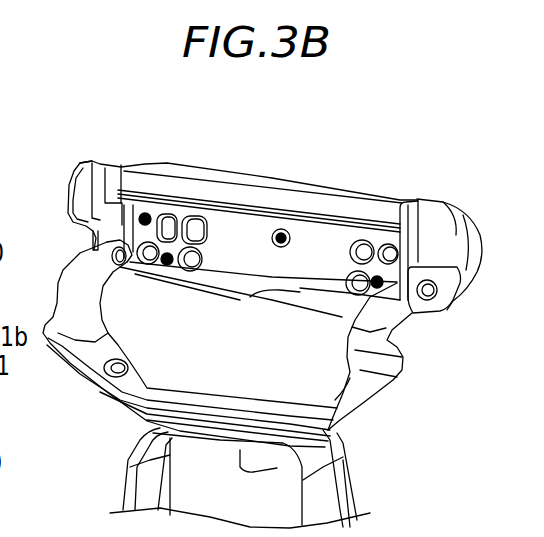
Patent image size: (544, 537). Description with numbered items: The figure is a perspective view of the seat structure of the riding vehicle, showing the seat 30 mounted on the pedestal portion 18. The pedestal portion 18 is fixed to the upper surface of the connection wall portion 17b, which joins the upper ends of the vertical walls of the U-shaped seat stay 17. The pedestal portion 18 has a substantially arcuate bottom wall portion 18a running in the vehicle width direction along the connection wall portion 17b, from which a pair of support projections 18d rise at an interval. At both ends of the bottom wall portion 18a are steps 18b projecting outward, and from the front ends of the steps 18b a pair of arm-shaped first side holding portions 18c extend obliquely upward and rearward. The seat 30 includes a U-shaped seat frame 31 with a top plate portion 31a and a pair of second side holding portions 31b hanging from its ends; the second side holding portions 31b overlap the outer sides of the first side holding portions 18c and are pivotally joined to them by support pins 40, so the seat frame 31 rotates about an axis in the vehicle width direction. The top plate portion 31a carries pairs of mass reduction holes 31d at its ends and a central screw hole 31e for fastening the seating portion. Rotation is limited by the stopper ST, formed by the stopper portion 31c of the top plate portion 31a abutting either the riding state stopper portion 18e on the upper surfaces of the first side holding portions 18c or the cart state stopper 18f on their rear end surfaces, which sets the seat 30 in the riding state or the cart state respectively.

The seat 30 is at (331, 154).
The seat frame 31 is at (418, 220).
The top plate portion 31a is at (243, 230).
The second side holding portions 31b is at (105, 175).
The stopper portion 31c is at (147, 212).
The mass reduction holes 31d is at (157, 210).
The screw hole 31e is at (302, 210).
The stopper ST is at (348, 265).
The pedestal portion 18 is at (410, 348).
The bottom wall portion 18a is at (197, 398).
The steps 18b is at (395, 385).
The first side holding portions 18c is at (372, 327).
The support projections 18d is at (117, 358).
The riding state stopper portion 18e is at (88, 249).
The cart state stopper 18f is at (140, 275).
The support pins 40 is at (110, 260).
The connection wall portion 17b is at (340, 457).
The seat stay 17 is at (240, 478).